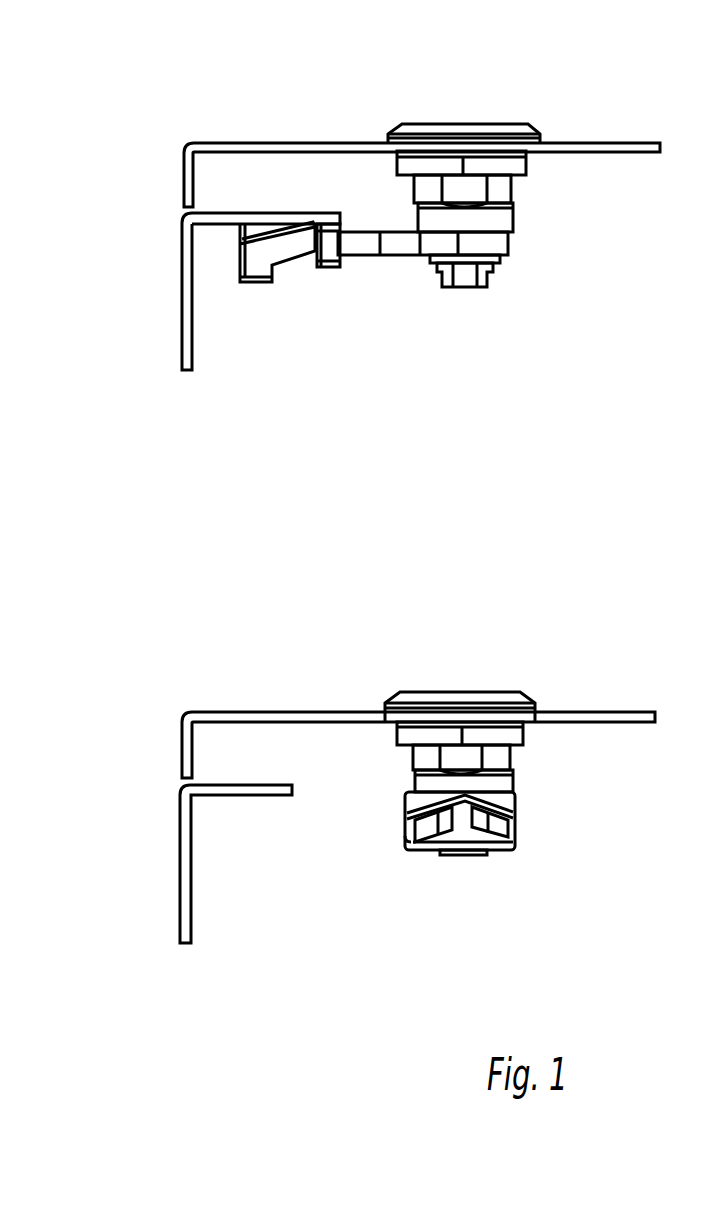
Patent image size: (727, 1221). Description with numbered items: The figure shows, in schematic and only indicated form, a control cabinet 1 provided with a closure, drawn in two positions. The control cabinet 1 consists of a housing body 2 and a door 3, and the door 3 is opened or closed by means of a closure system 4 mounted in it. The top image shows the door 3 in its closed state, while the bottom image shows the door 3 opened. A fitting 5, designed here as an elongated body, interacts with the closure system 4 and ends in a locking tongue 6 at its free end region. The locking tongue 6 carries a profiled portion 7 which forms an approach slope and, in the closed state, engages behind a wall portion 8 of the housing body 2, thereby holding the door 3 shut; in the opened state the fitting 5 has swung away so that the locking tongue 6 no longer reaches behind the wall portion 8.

The control cabinet 1 is at (134, 357).
The housing body 2 is at (187, 337).
The door 3 is at (222, 142).
The closure system 4 is at (541, 94).
The fitting 5 is at (362, 245).
The locking tongue 6 is at (288, 248).
The profiled portion 7 is at (273, 224).
The wall portion 8 is at (210, 217).